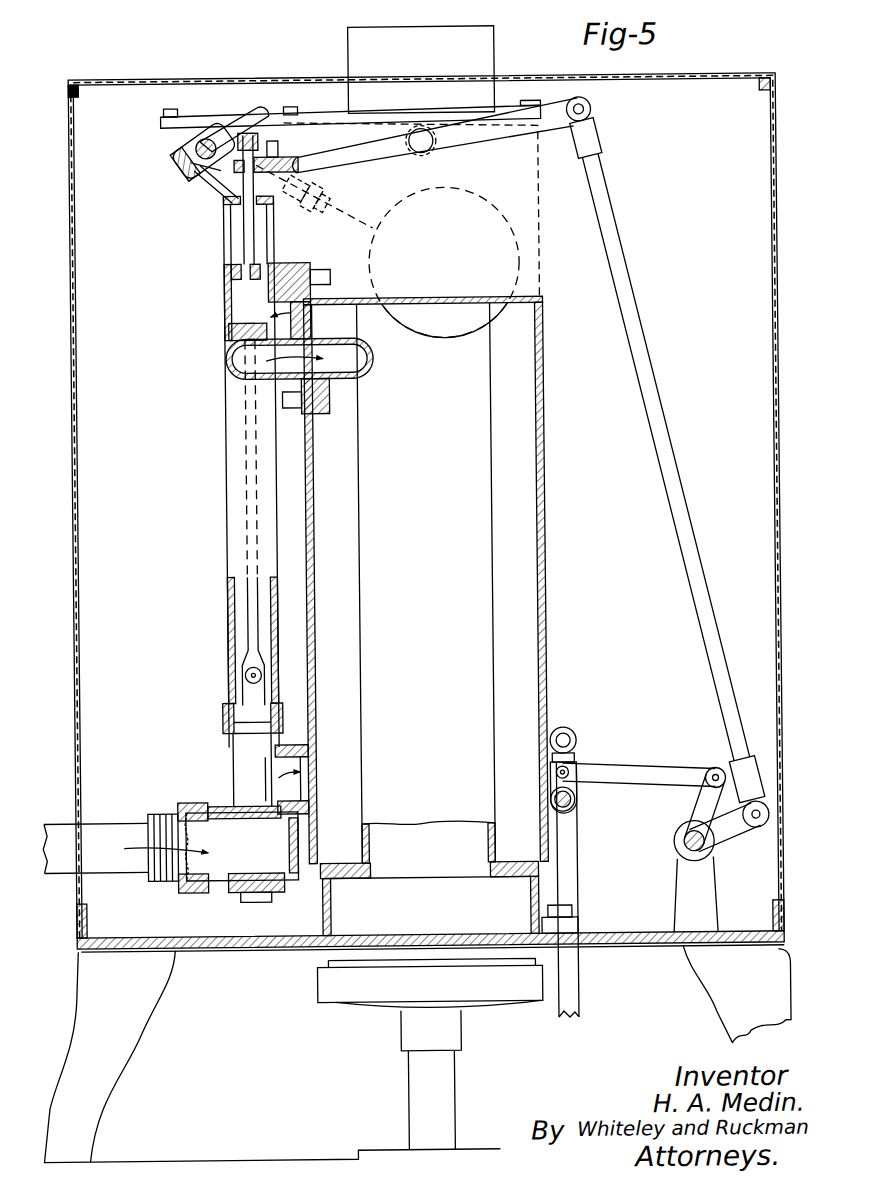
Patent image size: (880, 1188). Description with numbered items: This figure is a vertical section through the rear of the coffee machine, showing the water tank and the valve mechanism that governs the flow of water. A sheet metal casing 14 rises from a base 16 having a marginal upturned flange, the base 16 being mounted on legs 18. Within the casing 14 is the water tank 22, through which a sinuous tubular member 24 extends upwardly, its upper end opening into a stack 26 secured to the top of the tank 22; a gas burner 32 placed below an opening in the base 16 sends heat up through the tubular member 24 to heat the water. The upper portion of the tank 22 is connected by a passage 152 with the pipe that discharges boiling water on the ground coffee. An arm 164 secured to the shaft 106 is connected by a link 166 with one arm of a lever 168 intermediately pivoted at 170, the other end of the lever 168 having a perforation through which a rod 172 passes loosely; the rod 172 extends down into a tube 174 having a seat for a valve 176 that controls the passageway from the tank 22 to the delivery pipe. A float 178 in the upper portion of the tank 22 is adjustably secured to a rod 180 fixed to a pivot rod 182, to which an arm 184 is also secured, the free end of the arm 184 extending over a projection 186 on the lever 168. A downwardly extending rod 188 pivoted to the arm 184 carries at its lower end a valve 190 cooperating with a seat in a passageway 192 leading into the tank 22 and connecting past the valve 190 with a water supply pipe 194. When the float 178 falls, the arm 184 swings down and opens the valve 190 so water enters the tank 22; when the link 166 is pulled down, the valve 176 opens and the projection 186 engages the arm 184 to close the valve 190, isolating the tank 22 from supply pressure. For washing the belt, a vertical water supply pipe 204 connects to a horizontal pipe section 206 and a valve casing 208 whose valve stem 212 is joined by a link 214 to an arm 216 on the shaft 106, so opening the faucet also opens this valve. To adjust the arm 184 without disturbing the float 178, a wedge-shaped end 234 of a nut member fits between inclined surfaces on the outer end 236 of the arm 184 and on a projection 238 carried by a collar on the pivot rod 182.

The casing 14 is at (76, 656).
The base 16 is at (228, 951).
The legs 18 is at (119, 1047).
The water tank 22 is at (544, 582).
The sinuous tubular member 24 is at (483, 529).
The stack 26 is at (498, 48).
The gas burner 32 is at (340, 991).
The shaft 106 is at (697, 856).
The passage 152 is at (341, 368).
The arm 164 is at (731, 834).
The link 166 is at (704, 613).
The lever 168 is at (508, 137).
The pivot 170 is at (434, 151).
The rod 172 is at (238, 246).
The tube 174 is at (228, 291).
The valve 176 is at (242, 321).
The float 178 is at (472, 317).
The rod 180 is at (333, 181).
The pivot rod 182 is at (216, 174).
The arm 184 is at (254, 122).
The projection 186 is at (282, 146).
The rod 188 is at (251, 637).
The valve 190 is at (266, 825).
The passageway 192 is at (297, 763).
The water supply pipe 194 is at (114, 860).
The vertical water supply pipe 204 is at (568, 975).
The horizontal pipe section 206 is at (570, 736).
The valve casing 208 is at (572, 799).
The valve stem 212 is at (565, 771).
The link 214 is at (644, 762).
The arm 216 is at (685, 809).
The wedge-shaped end 234 is at (192, 153).
The outer end of arm 236 is at (189, 138).
The projection 238 is at (198, 168).